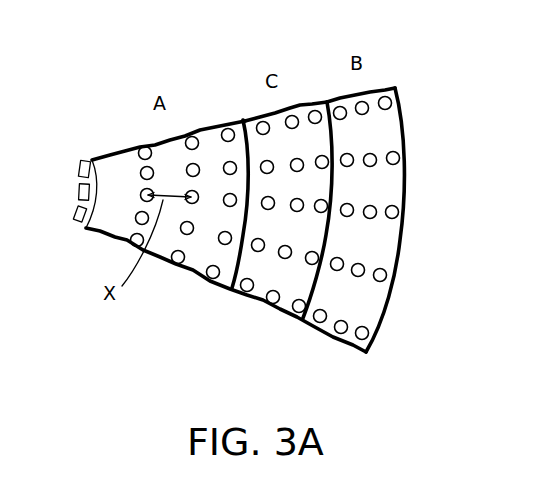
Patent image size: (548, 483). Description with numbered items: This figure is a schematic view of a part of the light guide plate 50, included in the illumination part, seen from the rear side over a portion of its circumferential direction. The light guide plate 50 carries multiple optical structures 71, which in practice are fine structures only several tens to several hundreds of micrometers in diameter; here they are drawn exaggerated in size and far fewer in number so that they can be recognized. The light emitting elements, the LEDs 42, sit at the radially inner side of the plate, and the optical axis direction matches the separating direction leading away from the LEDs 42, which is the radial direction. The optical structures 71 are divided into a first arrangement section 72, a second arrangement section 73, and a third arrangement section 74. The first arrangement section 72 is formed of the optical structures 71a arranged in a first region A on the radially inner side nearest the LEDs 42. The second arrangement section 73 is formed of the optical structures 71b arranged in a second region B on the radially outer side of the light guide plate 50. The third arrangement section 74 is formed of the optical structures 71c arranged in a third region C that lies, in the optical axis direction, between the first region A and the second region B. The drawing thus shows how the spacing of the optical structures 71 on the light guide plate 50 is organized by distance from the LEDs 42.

The LED 42 is at (73, 215).
The light guide plate 50 is at (409, 178).
The optical structures 71 is at (387, 271).
The optical structures 71a is at (187, 228).
The optical structures 71b is at (362, 338).
The optical structures 71c is at (285, 252).
The first arrangement section 72 is at (204, 122).
The second arrangement section 73 is at (384, 86).
The third arrangement section 74 is at (294, 102).